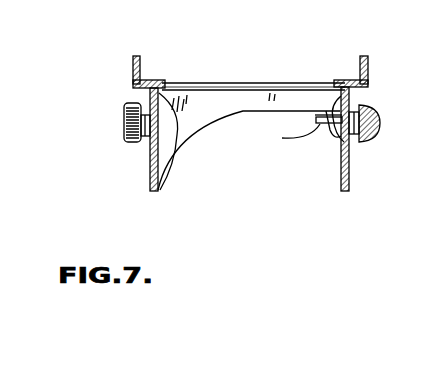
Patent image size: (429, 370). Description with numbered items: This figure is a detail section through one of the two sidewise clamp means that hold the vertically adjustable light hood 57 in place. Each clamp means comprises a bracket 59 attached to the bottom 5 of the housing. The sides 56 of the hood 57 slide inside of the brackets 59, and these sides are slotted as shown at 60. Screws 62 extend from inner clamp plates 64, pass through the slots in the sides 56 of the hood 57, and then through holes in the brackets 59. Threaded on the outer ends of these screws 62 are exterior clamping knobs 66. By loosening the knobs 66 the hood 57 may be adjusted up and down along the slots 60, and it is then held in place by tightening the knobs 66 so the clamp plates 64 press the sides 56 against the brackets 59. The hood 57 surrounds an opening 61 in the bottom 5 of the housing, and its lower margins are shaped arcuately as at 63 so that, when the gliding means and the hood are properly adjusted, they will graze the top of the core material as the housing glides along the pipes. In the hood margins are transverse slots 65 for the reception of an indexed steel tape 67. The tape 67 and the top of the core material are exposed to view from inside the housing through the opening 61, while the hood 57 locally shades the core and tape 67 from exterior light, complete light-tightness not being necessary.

The bottom 5 is at (357, 79).
The sides of the hood 56 is at (145, 166).
The light hood 57 is at (244, 176).
The bracket 59 is at (133, 87).
The slots 60 is at (166, 80).
The opening 61 is at (250, 81).
The screws 62 is at (167, 165).
The arcuate lower margins 63 is at (243, 113).
The inner clamp plates 64 is at (162, 142).
The transverse slots 65 is at (333, 124).
The exterior clamping knobs 66 is at (122, 127).
The indexed steel tape 67 is at (326, 111).